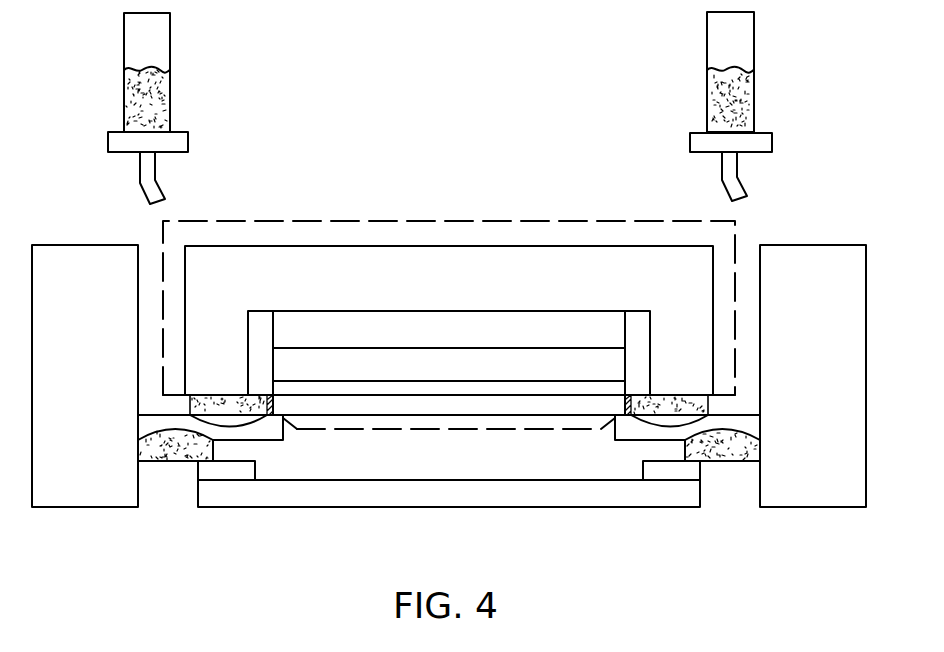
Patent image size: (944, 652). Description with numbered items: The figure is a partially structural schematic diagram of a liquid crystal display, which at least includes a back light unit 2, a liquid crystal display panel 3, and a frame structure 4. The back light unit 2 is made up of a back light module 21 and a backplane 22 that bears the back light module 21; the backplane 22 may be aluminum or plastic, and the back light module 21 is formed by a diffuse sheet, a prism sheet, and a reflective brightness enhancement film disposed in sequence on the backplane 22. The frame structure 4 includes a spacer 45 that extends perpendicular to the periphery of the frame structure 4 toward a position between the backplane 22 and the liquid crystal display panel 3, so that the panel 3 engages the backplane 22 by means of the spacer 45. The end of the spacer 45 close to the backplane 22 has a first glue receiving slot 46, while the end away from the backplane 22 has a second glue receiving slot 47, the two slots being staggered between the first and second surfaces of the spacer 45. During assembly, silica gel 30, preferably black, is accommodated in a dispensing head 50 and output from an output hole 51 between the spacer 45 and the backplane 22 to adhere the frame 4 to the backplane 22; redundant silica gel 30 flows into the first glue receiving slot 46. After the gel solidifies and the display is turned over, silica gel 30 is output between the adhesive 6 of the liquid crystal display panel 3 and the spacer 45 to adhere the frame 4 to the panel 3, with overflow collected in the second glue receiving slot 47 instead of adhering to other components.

The back light unit 2 is at (313, 218).
The liquid crystal display panel 3 is at (321, 490).
The frame structure 4 is at (77, 268).
The adhesive 6 is at (241, 471).
The back light module 21 is at (418, 327).
The backplane 22 is at (537, 267).
The silica gel 30 is at (193, 443).
The spacer 45 is at (267, 435).
The first glue receiving slot 46 is at (232, 423).
The second glue receiving slot 47 is at (159, 465).
The dispensing head 50 is at (152, 47).
The output hole 51 is at (150, 175).